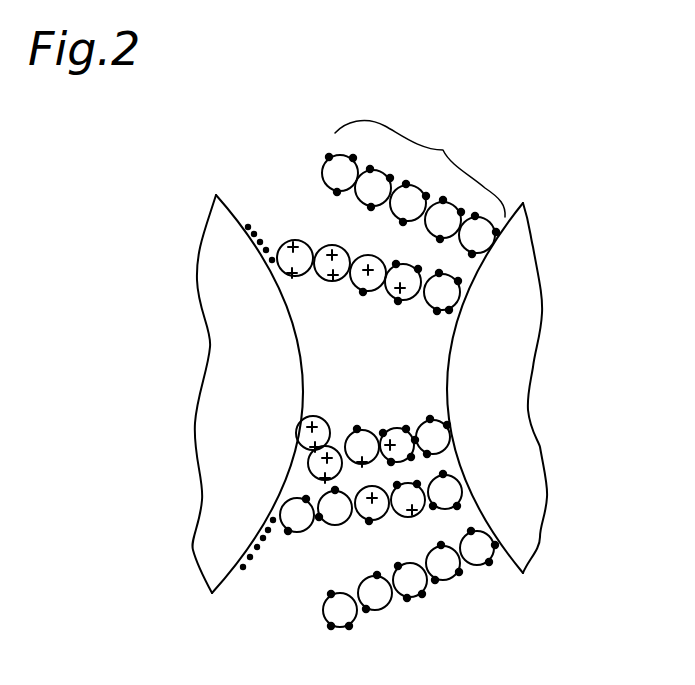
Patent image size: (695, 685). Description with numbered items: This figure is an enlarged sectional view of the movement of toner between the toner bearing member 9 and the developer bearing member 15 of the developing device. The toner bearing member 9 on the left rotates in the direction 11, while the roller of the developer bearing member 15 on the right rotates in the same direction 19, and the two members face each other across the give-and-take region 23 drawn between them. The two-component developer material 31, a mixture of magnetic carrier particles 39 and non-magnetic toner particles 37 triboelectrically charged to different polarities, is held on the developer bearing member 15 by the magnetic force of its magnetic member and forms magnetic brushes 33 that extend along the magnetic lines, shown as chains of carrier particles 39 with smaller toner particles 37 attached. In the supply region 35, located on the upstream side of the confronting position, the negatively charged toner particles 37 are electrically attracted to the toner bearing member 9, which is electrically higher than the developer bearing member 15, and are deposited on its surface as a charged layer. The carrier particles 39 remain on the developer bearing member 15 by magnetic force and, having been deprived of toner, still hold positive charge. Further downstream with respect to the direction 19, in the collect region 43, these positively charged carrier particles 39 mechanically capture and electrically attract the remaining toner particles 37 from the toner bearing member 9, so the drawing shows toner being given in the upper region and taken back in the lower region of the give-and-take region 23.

The toner bearing member 9 is at (222, 248).
The rotational direction of toner bearing member 11 is at (253, 312).
The developer bearing member 15 is at (512, 277).
The rotational direction of developer bearing member 19 is at (492, 452).
The give-and-take region 23 is at (360, 381).
The two-component developer material 31 is at (415, 123).
The magnetic brushes 33 is at (420, 168).
The supply region 35 is at (312, 210).
The toner particles 37 is at (248, 227).
The carrier particles 39 is at (340, 161).
The collect region 43 is at (310, 570).